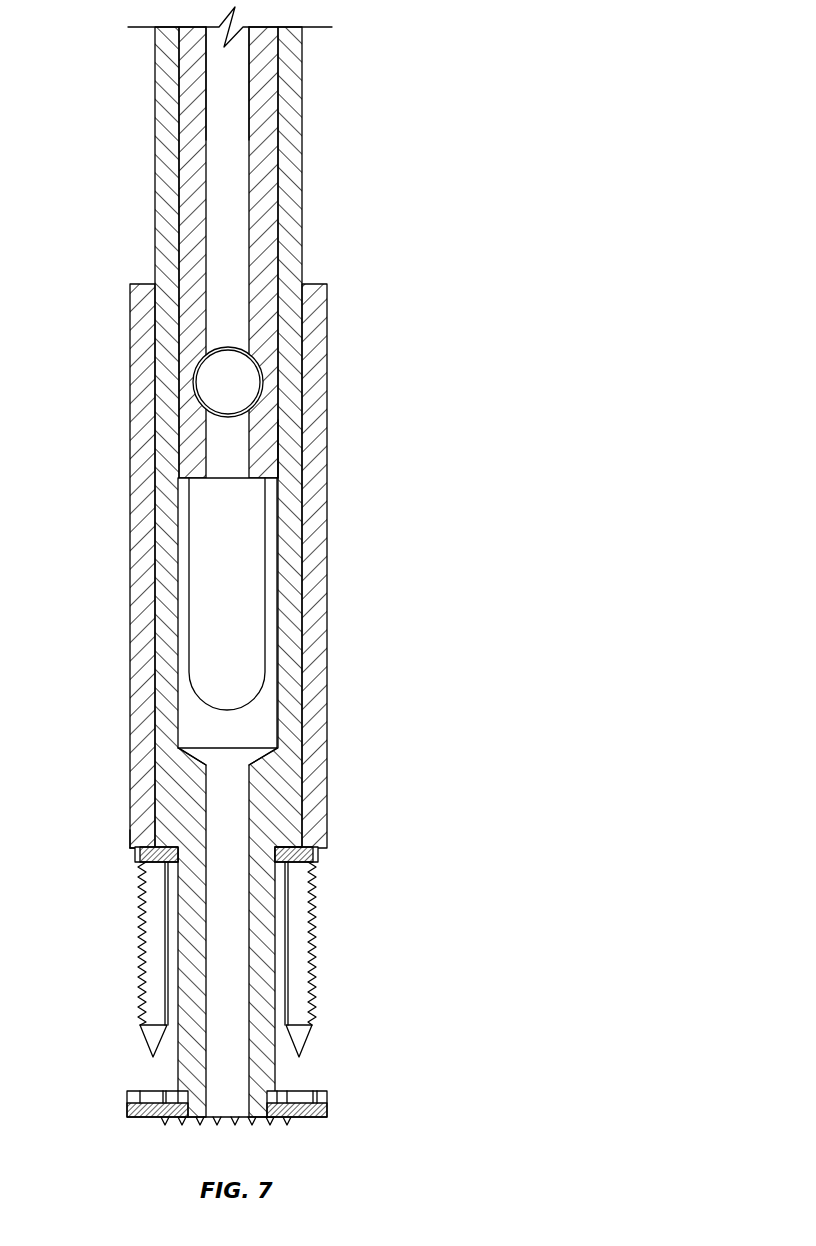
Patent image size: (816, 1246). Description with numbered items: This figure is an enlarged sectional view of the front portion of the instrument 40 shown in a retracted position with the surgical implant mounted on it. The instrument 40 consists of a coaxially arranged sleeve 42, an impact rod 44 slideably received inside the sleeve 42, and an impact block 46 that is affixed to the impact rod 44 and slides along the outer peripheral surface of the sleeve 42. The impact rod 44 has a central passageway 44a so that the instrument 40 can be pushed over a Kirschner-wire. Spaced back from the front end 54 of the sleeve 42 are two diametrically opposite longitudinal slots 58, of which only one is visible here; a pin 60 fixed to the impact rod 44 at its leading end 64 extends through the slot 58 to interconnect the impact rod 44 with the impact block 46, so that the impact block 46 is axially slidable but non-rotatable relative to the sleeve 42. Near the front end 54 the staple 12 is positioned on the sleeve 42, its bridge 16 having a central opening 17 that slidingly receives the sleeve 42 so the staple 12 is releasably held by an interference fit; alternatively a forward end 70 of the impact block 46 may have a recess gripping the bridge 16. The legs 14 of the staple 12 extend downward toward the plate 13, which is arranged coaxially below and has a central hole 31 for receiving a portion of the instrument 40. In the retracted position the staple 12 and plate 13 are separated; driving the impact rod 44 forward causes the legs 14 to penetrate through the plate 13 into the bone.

The instrument 40 is at (466, 60).
The sleeve 42 is at (305, 230).
The impact rod 44 is at (187, 232).
The central passageway 44a is at (205, 108).
The impact block 46 is at (130, 668).
The slots 58 is at (257, 525).
The pins 60 is at (210, 381).
The leading end 64 is at (273, 431).
The forward end 70 is at (130, 847).
The central opening 17 is at (270, 858).
The staple 12 is at (135, 858).
The bridge 16 is at (320, 855).
The legs 14 is at (140, 943).
The front end 54 is at (275, 1078).
The plate 13 is at (328, 1112).
The central hole 31 is at (208, 1117).